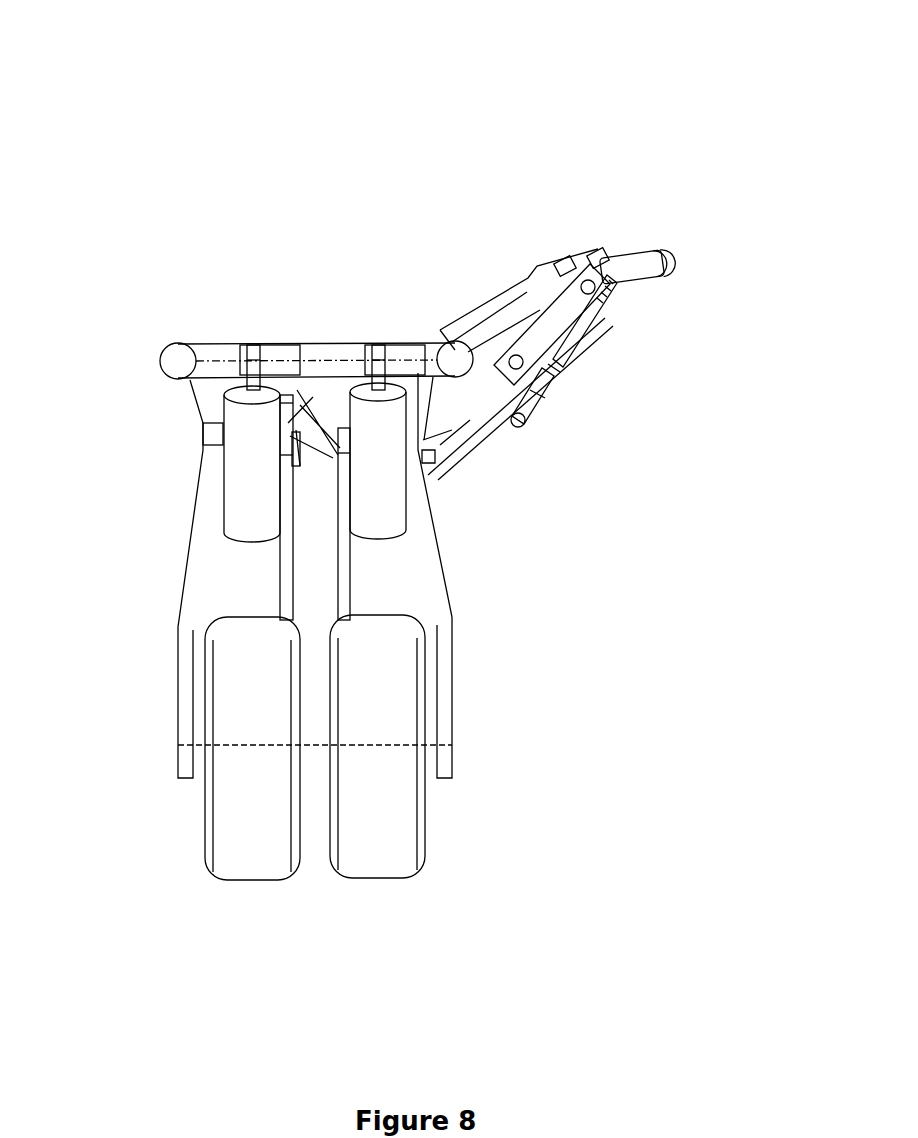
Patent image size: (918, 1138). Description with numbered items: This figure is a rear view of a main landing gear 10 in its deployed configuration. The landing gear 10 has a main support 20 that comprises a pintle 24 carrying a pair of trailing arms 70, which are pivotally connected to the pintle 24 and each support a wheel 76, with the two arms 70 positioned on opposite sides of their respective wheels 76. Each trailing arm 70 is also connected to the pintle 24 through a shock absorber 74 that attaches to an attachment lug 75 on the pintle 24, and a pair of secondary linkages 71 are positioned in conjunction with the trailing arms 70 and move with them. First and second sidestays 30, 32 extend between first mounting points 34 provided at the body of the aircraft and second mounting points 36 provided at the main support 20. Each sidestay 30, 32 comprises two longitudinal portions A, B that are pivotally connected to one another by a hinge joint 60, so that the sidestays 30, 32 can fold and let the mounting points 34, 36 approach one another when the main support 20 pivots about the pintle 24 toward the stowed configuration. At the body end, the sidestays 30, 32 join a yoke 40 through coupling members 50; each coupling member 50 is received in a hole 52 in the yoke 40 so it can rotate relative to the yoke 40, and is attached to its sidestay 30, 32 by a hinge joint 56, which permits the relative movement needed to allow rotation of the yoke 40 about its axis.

The landing gear 10 is at (102, 92).
The main support 20 is at (232, 262).
The pintle 24 is at (190, 340).
The attachment lugs 75 is at (400, 340).
The shock absorbers 74 is at (378, 545).
The secondary linkages 71 is at (285, 605).
The second mounting points 36 is at (302, 468).
The trailing arms 70 is at (440, 718).
The wheels 76 is at (243, 852).
The first sidestay 30 is at (625, 355).
The second sidestay 32 is at (488, 268).
The first mounting points 34 is at (560, 250).
The yoke 40 is at (637, 263).
The coupling member 50 is at (660, 265).
The hole 52 is at (667, 275).
The hinge joint 56 is at (618, 300).
The hinge joint 60 is at (548, 390).
The longitudinal portion A is at (490, 300).
The longitudinal portion B is at (456, 432).